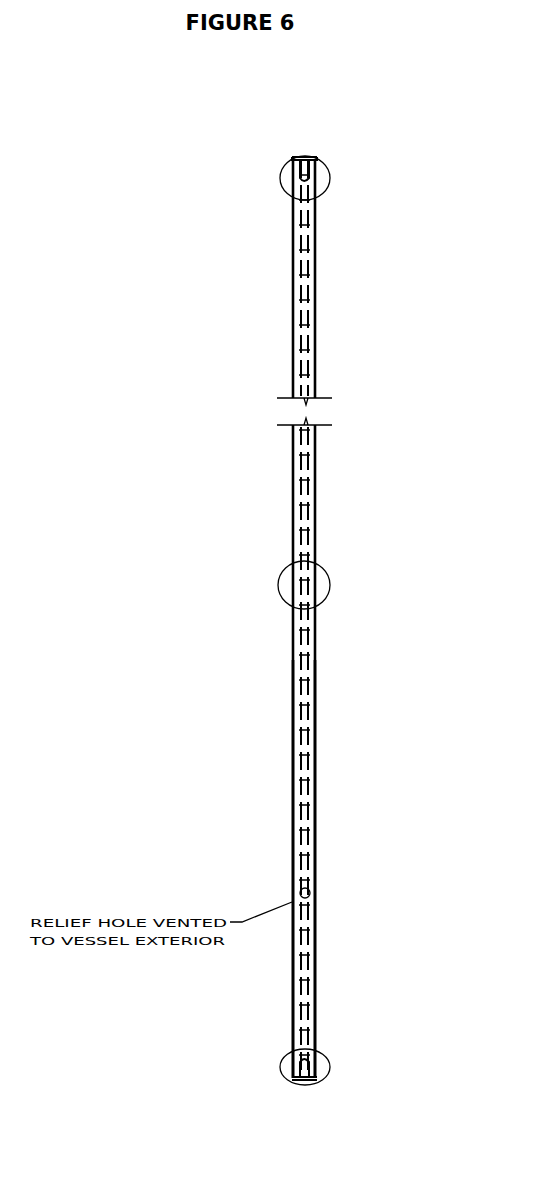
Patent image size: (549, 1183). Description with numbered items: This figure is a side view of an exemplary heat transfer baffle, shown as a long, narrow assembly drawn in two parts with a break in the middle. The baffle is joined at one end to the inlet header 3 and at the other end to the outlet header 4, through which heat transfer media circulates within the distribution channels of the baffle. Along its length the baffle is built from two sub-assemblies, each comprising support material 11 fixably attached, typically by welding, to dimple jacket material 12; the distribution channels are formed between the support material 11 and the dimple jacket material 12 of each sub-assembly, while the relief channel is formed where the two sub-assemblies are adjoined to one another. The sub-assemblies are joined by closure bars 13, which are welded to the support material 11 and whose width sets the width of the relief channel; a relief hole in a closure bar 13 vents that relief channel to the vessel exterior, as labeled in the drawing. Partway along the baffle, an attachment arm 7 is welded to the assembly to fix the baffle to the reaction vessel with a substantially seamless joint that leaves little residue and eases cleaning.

The inlet header 3 is at (330, 1073).
The outlet header 4 is at (335, 168).
The attachment arm 7 is at (330, 573).
The support material 11 is at (293, 730).
The dimple jacket material 12 is at (315, 453).
The closure bar 13 is at (292, 157).